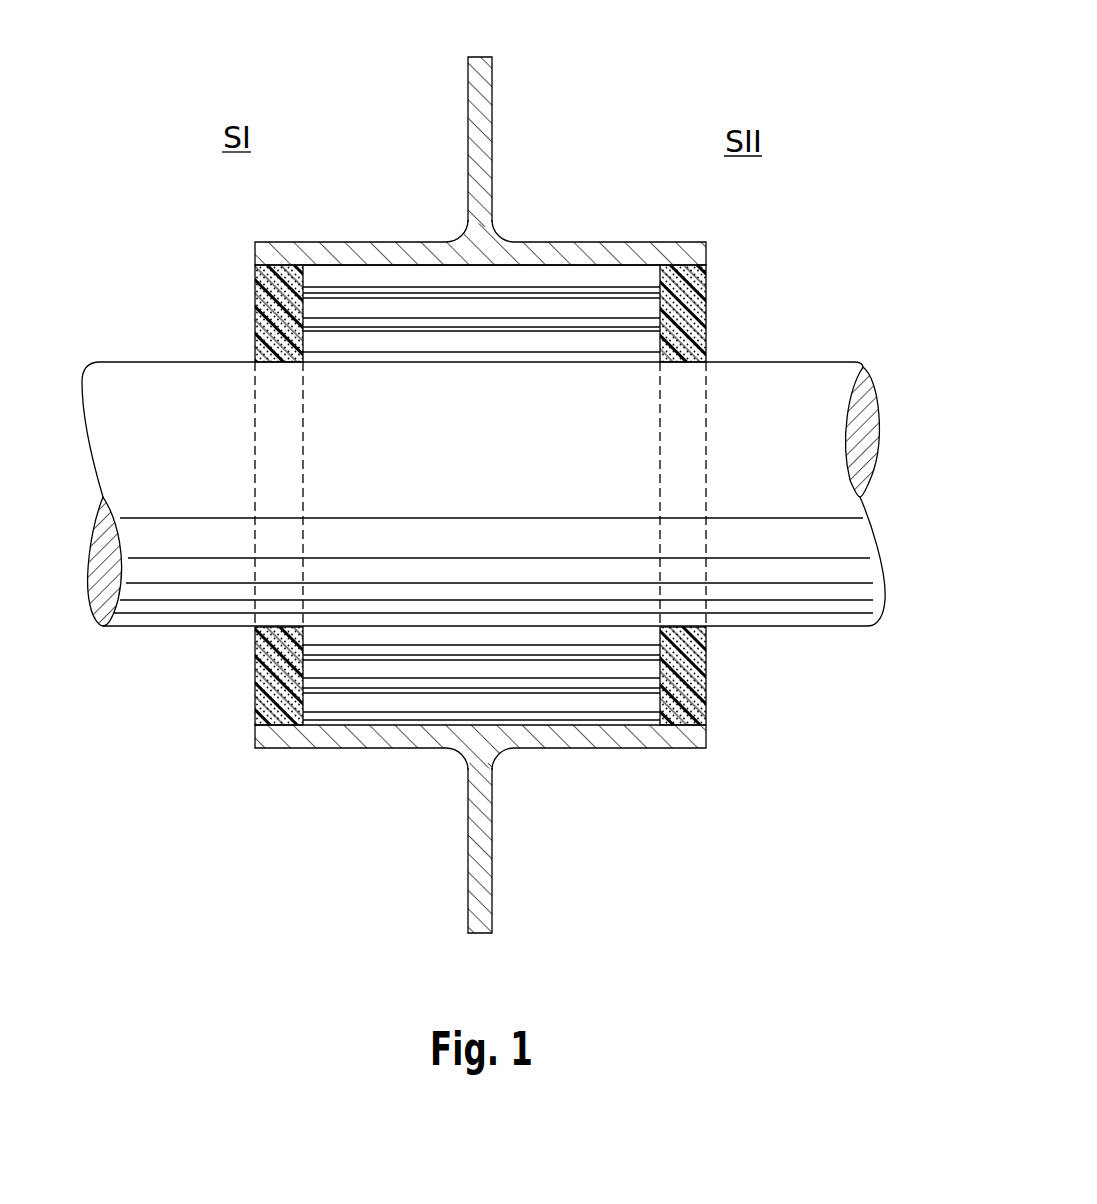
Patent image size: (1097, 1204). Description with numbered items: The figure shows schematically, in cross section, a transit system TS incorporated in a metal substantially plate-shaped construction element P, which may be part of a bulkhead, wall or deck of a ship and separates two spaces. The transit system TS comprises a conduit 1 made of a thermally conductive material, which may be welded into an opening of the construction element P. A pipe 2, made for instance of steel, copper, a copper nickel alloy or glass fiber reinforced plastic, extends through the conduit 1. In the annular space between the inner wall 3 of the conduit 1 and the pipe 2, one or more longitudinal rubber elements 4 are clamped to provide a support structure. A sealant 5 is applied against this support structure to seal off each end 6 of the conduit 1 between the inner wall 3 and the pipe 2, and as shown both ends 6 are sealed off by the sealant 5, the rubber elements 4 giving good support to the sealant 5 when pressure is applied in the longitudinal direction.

The conduit 1 is at (623, 258).
The pipe 2 is at (826, 380).
The inner wall 3 is at (422, 268).
The rubber element 4 is at (548, 278).
The sealant 5 is at (688, 298).
The end 6 is at (706, 725).
The plate-shaped construction element P is at (482, 118).
The transit system TS is at (670, 107).